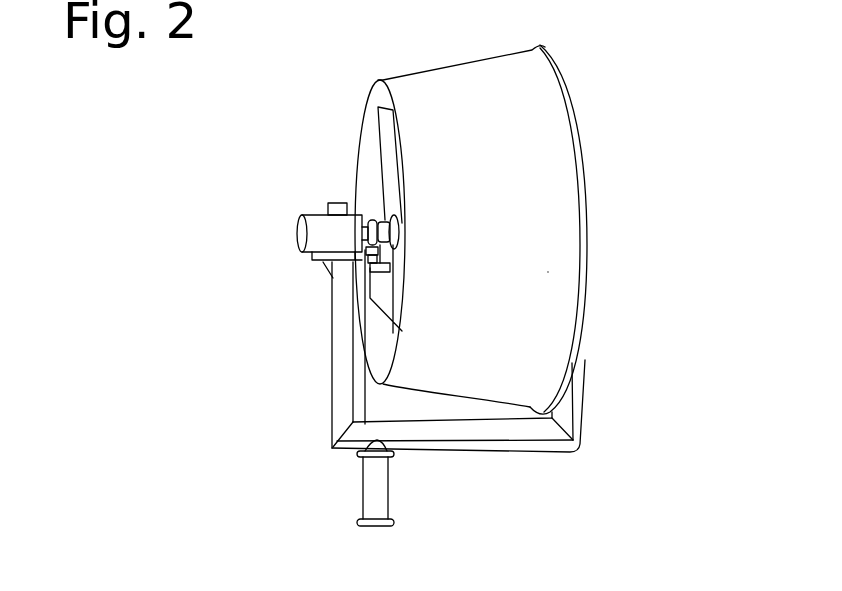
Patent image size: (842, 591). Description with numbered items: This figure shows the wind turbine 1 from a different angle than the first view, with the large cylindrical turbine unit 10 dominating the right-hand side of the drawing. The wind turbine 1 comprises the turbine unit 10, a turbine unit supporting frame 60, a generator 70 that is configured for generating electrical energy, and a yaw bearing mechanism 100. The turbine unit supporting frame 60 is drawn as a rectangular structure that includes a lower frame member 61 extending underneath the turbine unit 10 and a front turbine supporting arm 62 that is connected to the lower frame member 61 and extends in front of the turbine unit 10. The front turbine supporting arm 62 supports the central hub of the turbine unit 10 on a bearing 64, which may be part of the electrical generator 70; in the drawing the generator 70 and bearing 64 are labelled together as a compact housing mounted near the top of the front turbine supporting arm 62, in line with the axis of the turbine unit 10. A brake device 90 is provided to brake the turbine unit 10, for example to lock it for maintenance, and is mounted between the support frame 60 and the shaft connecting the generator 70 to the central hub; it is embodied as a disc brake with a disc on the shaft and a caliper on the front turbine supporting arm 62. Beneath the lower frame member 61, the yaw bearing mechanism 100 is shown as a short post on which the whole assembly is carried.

The wind turbine 1 is at (288, 188).
The turbine unit 10 is at (548, 272).
The turbine unit supporting frame 60 is at (322, 417).
The lower frame member 61 is at (460, 437).
The front turbine supporting arm 62 is at (347, 343).
The bearing 64 is at (287, 238).
The generator 70 is at (322, 234).
The brake device 90 is at (377, 210).
The yaw bearing mechanism 100 is at (358, 490).